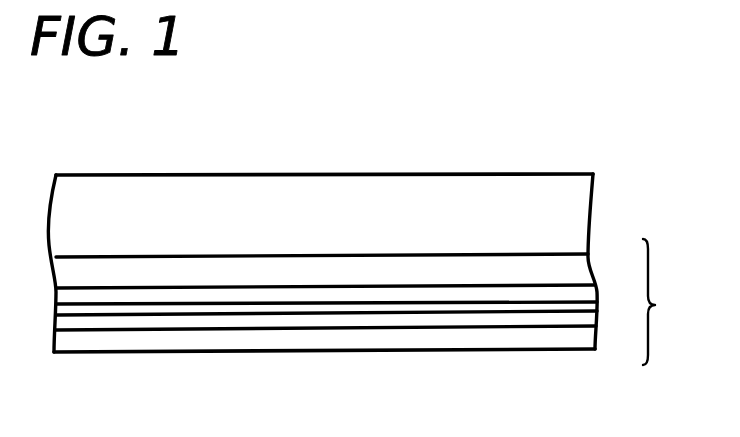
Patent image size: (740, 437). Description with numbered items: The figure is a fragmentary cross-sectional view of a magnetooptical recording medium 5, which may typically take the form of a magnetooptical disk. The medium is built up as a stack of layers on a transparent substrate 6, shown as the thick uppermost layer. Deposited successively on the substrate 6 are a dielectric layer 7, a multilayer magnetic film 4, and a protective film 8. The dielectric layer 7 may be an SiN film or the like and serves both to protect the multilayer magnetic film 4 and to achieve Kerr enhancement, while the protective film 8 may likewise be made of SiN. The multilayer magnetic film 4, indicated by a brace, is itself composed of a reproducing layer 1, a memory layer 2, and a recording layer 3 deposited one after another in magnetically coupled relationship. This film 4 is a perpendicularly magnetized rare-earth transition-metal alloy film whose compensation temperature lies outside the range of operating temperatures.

The reproducing layer 1 is at (597, 283).
The memory layer 2 is at (603, 303).
The recording layer 3 is at (593, 315).
The multilayer magnetic film 4 is at (660, 322).
The magnetooptical recording medium 5 is at (318, 173).
The transparent substrate 6 is at (582, 196).
The dielectric layer 7 is at (593, 258).
The protective film 8 is at (590, 333).